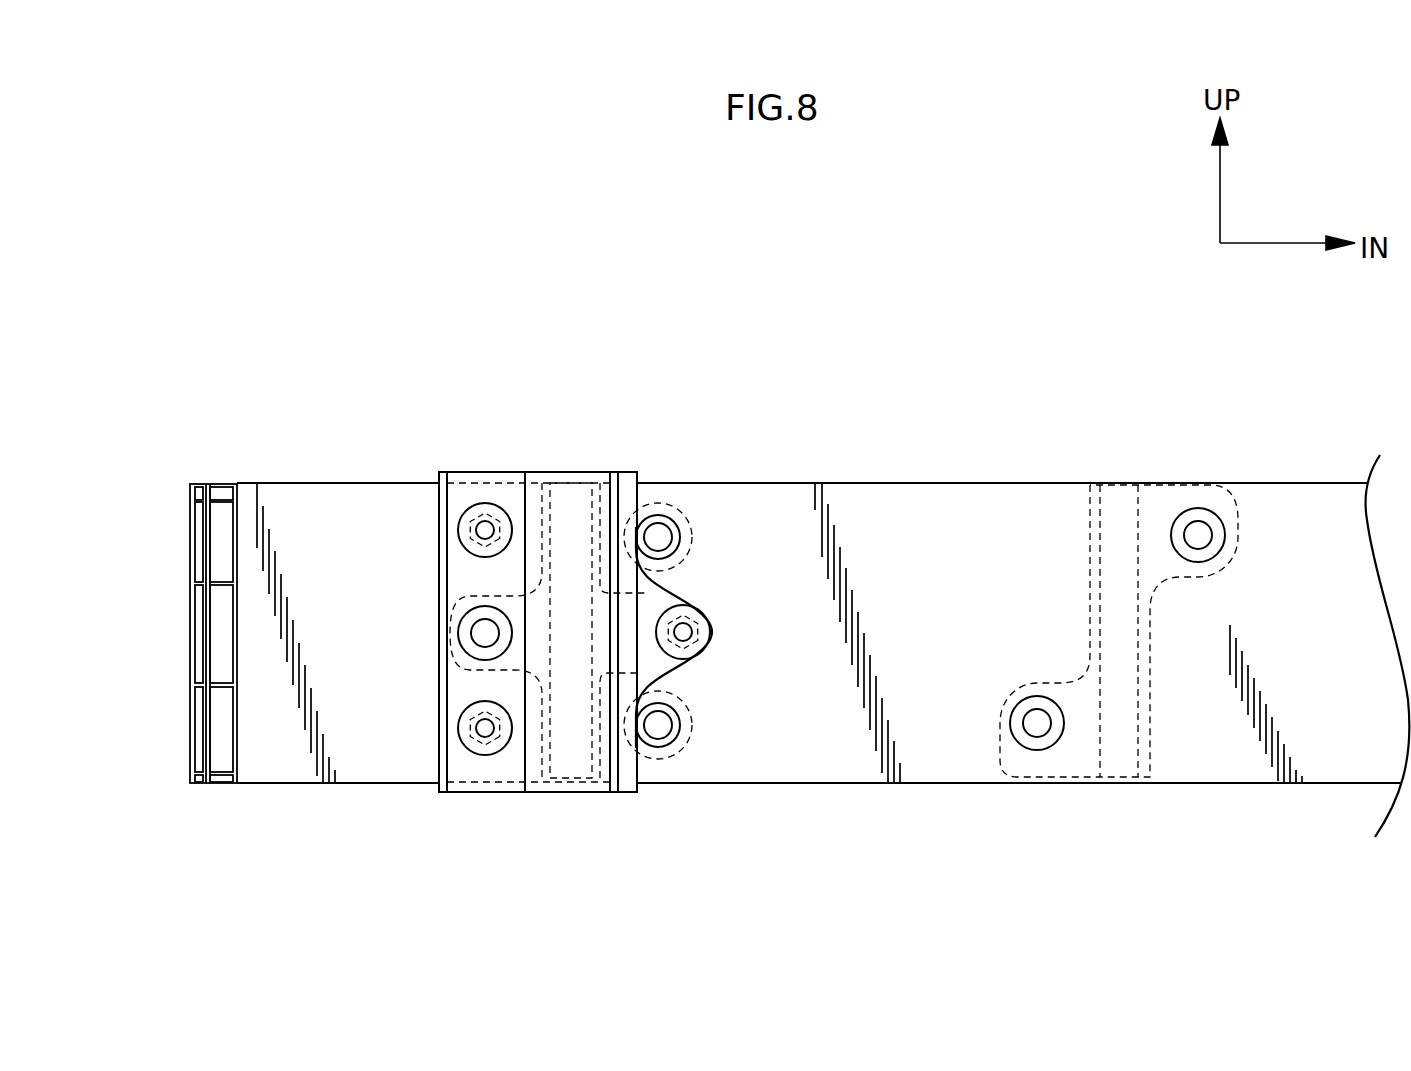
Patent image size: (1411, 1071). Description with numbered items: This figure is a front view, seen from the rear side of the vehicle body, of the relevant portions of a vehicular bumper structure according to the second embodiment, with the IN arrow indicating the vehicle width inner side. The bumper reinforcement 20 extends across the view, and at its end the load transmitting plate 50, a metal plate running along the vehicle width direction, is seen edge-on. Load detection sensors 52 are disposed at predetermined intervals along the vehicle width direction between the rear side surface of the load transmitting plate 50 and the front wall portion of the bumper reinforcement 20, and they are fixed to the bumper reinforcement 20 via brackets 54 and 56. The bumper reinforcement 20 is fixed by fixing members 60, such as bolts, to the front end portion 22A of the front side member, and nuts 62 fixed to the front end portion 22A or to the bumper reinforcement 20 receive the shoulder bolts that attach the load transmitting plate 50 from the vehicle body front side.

The bumper reinforcement 20 is at (850, 480).
The front end portion of front side member 22A is at (477, 792).
The load transmitting plate 50 is at (176, 530).
The load detection sensor 52 is at (572, 500).
The bracket 54 is at (692, 520).
The bracket 56 is at (1240, 520).
The fixing member 60 is at (458, 542).
The nut 62 is at (665, 522).